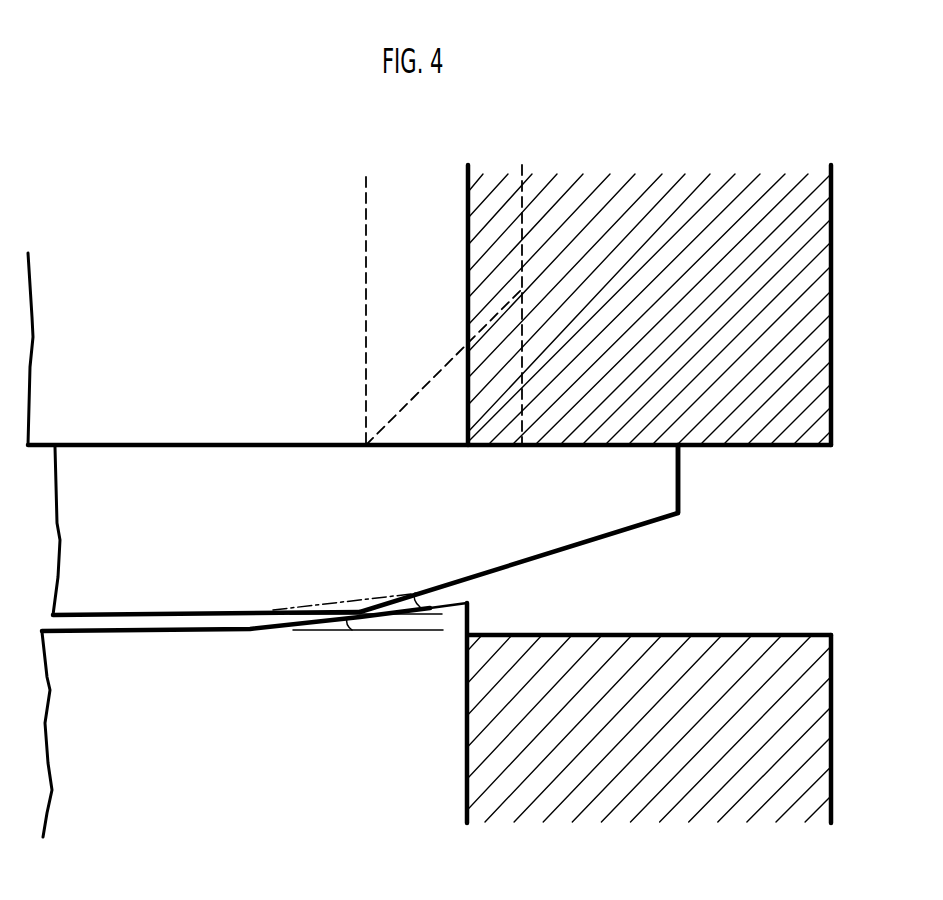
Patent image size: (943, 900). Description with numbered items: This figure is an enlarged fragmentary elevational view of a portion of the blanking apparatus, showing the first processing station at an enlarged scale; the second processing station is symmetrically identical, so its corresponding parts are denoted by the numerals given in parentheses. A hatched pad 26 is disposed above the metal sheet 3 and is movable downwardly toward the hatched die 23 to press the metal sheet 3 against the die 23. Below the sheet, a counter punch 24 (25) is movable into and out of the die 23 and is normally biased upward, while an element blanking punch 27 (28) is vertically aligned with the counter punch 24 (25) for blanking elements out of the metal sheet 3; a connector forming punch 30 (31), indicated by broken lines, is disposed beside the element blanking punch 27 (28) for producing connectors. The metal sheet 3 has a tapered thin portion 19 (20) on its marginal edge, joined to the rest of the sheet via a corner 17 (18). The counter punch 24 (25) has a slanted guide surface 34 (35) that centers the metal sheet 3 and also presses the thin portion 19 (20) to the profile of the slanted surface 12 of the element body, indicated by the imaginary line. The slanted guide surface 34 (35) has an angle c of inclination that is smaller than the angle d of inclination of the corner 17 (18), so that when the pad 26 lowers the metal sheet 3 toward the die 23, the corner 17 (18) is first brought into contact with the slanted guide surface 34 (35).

The metal sheet 3 is at (712, 482).
The slanted surface 12 is at (330, 600).
The corner 17 is at (366, 563).
The corner 18 is at (358, 610).
The thin portion 19 is at (543, 528).
The thin portion 20 is at (647, 557).
The die 23 is at (845, 736).
The counter punch 24 is at (328, 713).
The counter punch 25 is at (425, 667).
The pad 26 is at (850, 297).
The element blanking punch 27 is at (429, 434).
The element blanking punch 28 is at (148, 463).
The connector forming punch 30 is at (444, 275).
The connector forming punch 31 is at (408, 203).
The slanted guide surface 34 is at (412, 569).
The slanted guide surface 35 is at (452, 607).
The angle of inclination of the corner d is at (435, 585).
The angle of inclination of the slanted guide surface c is at (372, 646).